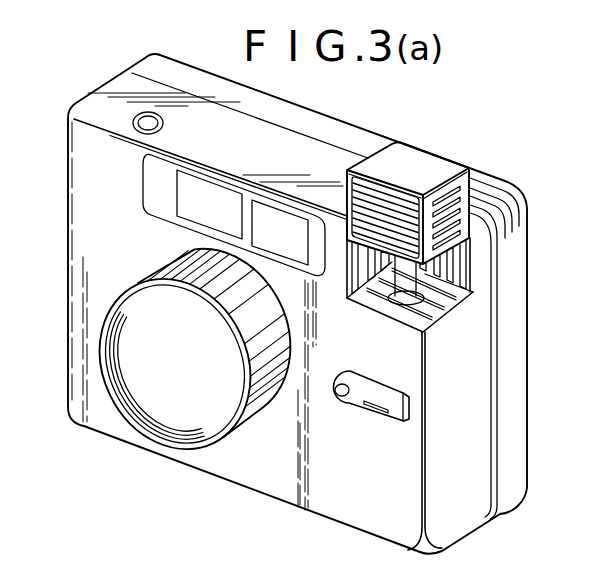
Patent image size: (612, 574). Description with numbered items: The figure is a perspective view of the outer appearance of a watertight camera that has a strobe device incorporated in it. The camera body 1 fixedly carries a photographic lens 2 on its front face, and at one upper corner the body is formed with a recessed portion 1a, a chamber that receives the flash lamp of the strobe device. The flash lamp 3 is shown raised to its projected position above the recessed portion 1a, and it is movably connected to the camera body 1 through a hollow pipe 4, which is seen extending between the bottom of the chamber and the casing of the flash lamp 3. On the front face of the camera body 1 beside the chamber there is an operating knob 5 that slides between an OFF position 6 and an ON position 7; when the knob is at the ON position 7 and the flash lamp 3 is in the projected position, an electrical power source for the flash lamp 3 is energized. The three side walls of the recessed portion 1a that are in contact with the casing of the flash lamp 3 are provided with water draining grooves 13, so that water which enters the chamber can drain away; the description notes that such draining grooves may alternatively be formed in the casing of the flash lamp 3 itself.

The camera body 1 is at (74, 263).
The recessed portion 1a is at (474, 291).
The photographic lens 2 is at (213, 423).
The flash lamp 3 is at (423, 162).
The hollow pipe 4 is at (466, 299).
The operating knob 5 is at (368, 384).
The OFF position 6 is at (341, 460).
The ON position 7 is at (403, 451).
The water draining grooves 13 is at (356, 278).